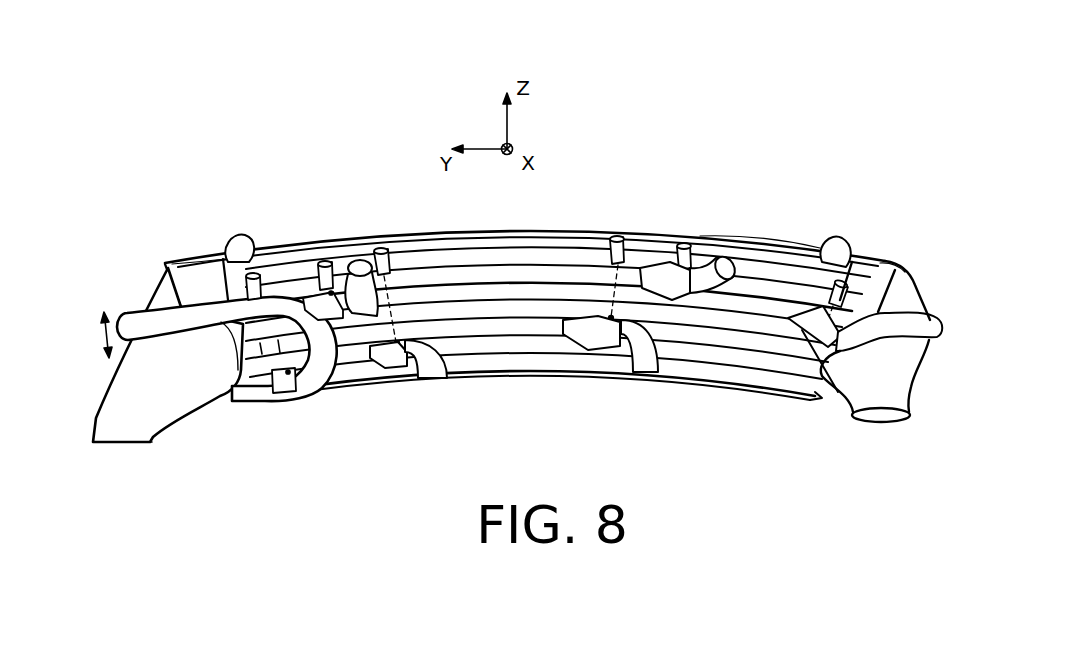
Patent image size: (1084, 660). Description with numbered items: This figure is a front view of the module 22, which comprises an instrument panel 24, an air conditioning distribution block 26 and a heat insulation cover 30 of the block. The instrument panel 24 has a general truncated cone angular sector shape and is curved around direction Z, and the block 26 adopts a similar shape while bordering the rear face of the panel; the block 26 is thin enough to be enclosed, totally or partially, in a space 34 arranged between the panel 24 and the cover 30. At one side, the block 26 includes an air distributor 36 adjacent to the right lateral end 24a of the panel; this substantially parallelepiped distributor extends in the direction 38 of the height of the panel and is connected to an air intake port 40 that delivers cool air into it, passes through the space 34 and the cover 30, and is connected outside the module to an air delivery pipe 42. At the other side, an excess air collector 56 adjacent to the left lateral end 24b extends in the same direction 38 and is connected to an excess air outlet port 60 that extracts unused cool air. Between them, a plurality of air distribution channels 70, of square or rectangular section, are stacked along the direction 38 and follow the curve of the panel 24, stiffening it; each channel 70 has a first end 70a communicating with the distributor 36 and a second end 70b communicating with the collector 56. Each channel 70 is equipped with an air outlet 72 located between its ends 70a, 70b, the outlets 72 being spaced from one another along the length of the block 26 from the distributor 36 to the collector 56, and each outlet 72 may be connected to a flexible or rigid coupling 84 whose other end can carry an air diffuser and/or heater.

The module 22 is at (611, 195).
The instrument panel 24 is at (687, 232).
The right lateral end of the instrument panel 24a is at (205, 258).
The left lateral end of the instrument panel 24b is at (860, 257).
The air conditioning distribution block 26 is at (746, 247).
The heat insulation cover 30 is at (137, 317).
The space 34 is at (162, 297).
The air distributor 36 is at (193, 287).
The direction of the height of the panel 38 is at (101, 342).
The air intake port 40 is at (227, 363).
The air delivery pipe 42 is at (130, 432).
The excess air collector 56 is at (872, 283).
The excess air outlet port 60 is at (900, 405).
The air distribution channels 70 is at (482, 256).
The first end of the channel 70a is at (252, 368).
The second end of the channel 70b is at (792, 345).
The air outlet 72 is at (312, 287).
The coupling 84 is at (238, 253).